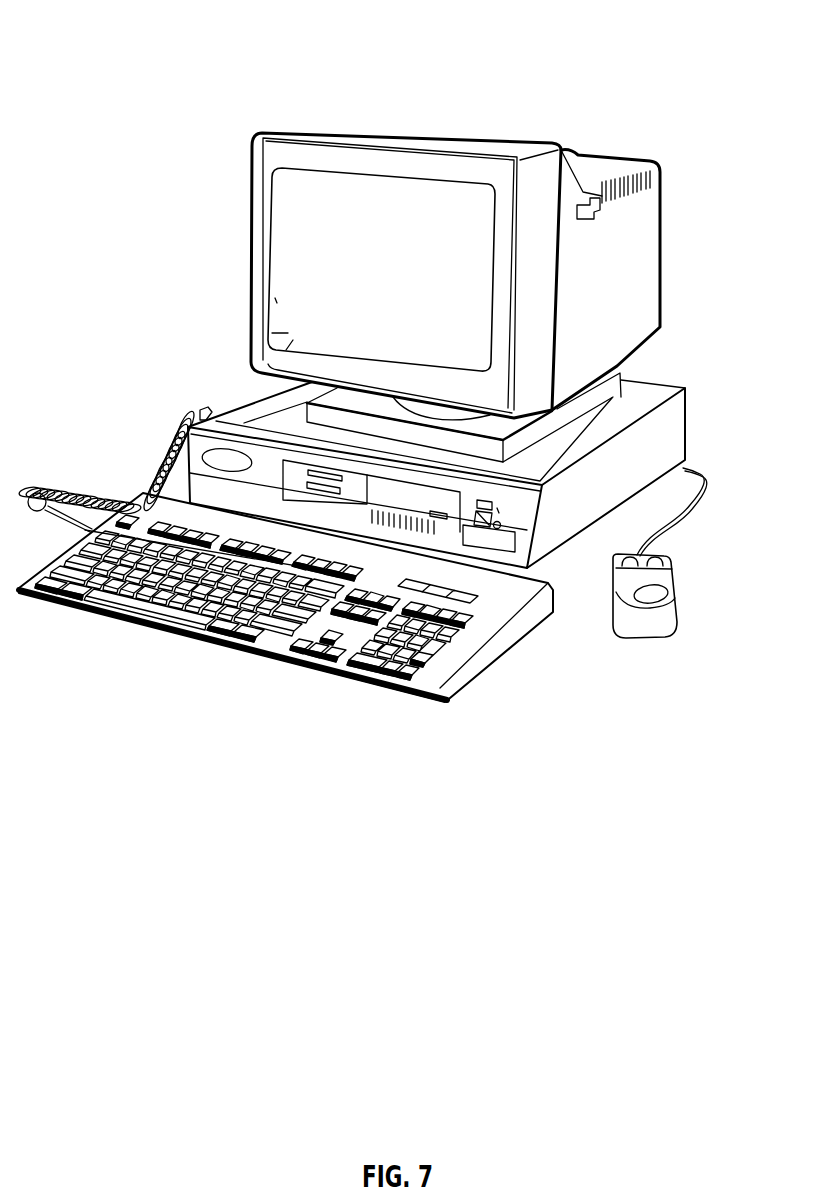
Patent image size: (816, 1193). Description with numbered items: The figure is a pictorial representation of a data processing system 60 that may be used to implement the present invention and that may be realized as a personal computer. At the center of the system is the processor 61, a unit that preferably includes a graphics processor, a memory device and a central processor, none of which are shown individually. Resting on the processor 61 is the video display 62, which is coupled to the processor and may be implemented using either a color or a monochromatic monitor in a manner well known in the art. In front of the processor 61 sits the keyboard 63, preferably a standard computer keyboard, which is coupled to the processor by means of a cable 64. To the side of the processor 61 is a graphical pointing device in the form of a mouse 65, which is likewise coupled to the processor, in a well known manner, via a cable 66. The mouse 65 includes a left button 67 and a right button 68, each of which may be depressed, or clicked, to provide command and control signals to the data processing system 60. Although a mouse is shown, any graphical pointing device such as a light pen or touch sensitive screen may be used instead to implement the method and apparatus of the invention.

The data processing system 60 is at (548, 112).
The processor 61 is at (675, 420).
The video display 62 is at (247, 253).
The keyboard 63 is at (283, 663).
The cable 64 is at (157, 433).
The mouse 65 is at (662, 625).
The cable 66 is at (688, 512).
The left button 67 is at (617, 567).
The right button 68 is at (666, 568).